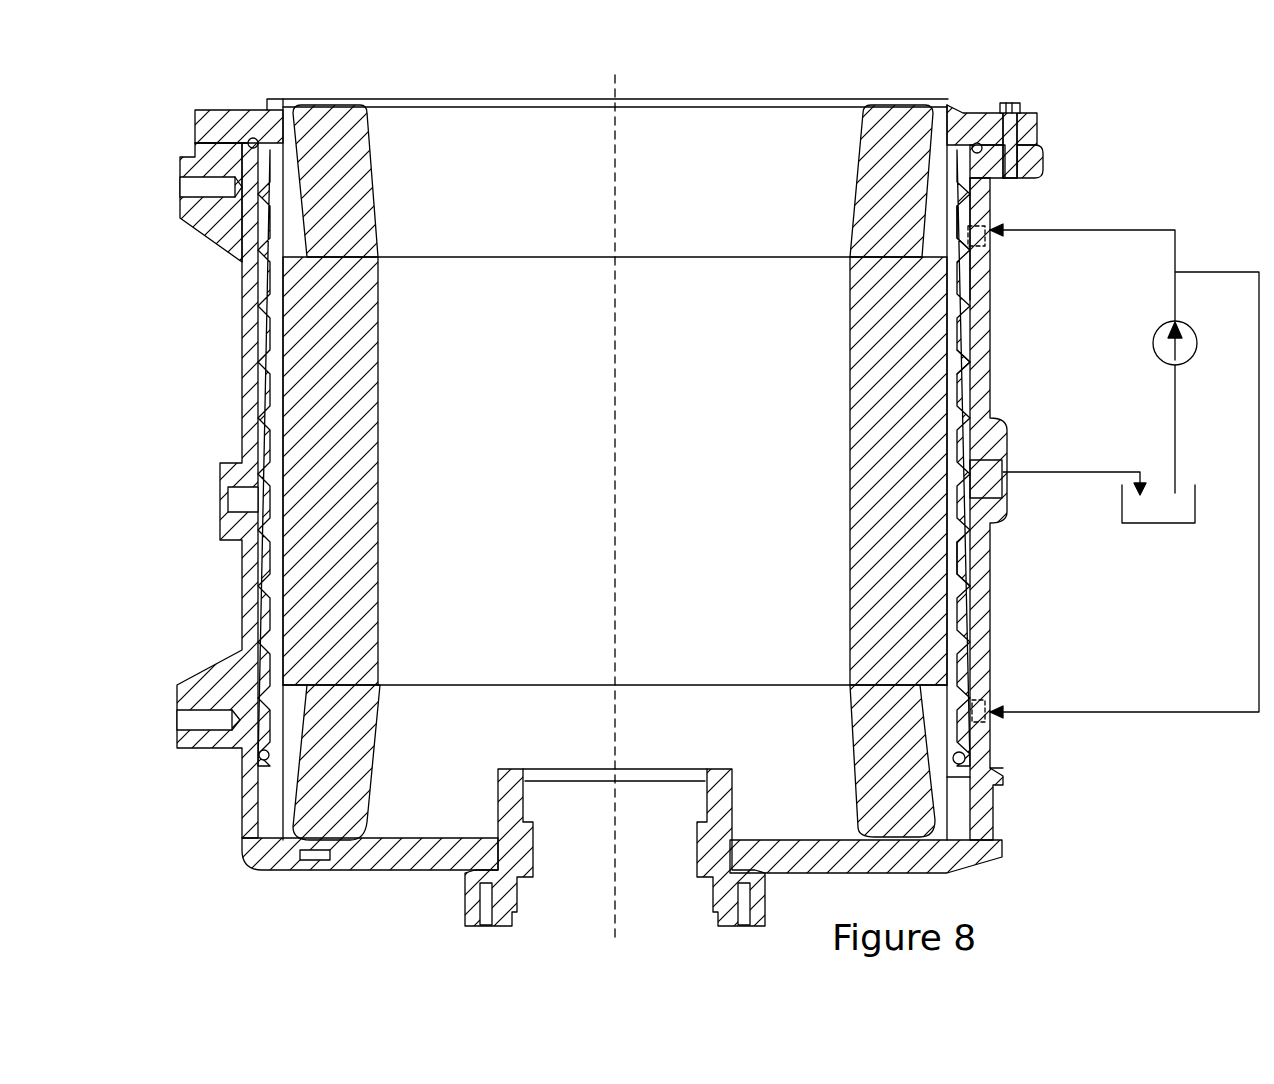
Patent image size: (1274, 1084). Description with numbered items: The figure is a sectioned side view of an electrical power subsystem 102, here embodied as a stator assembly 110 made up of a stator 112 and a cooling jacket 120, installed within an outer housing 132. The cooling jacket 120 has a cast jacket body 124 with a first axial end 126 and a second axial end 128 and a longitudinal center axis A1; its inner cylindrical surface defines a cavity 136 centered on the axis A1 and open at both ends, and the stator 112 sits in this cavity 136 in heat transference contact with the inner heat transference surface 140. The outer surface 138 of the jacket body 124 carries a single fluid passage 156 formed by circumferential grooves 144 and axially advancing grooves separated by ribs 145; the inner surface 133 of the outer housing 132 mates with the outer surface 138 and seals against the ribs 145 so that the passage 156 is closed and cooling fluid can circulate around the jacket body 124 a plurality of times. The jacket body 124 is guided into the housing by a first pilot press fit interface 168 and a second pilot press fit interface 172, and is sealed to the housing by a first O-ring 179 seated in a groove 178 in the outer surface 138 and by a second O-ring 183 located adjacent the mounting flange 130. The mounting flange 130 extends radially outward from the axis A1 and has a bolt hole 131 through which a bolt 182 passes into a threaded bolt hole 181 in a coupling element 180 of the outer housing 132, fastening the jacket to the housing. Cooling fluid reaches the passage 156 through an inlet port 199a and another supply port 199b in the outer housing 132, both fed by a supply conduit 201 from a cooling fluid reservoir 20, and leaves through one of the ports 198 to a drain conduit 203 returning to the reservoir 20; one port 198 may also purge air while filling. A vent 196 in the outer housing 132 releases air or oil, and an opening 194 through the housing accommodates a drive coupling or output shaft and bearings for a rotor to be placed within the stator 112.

The stator assembly 110 is at (158, 68).
The electrical power subsystem 102 is at (193, 113).
The second O-ring 183 is at (247, 140).
The coupling element 180 is at (183, 156).
The first pilot press fit interface 168 is at (200, 190).
The outer surface 138 is at (250, 200).
The fluid passage 156 is at (262, 240).
The stator 112 is at (330, 283).
The ports 198 is at (230, 498).
The second pilot press fit interface 172 is at (258, 750).
The second axial end 128 is at (270, 840).
The first axial end 126 is at (270, 107).
The cooling jacket 120 is at (947, 102).
The bolt hole 131 is at (1004, 125).
The bolt 182 is at (1014, 103).
The mounting flange 130 is at (1030, 128).
The threaded bolt hole 181 is at (1010, 180).
The cavity 136 is at (962, 222).
The inlet port 199a is at (985, 237).
The inner surface 133 is at (975, 270).
The outer housing 132 is at (985, 313).
The ribs 145 is at (968, 370).
The inner heat transference surface 140 is at (943, 513).
The circumferential grooves 144 is at (963, 550).
The jacket body 124 is at (958, 630).
The supply port 199b is at (982, 700).
The first O-ring 179 is at (967, 757).
The groove 178 is at (1003, 770).
The vent 196 is at (1002, 855).
The opening 194 is at (690, 860).
The supply conduit 201 is at (1160, 375).
The drain conduit 203 is at (1078, 465).
The reservoir 20 is at (1160, 525).
The longitudinal center axis A1 is at (617, 135).